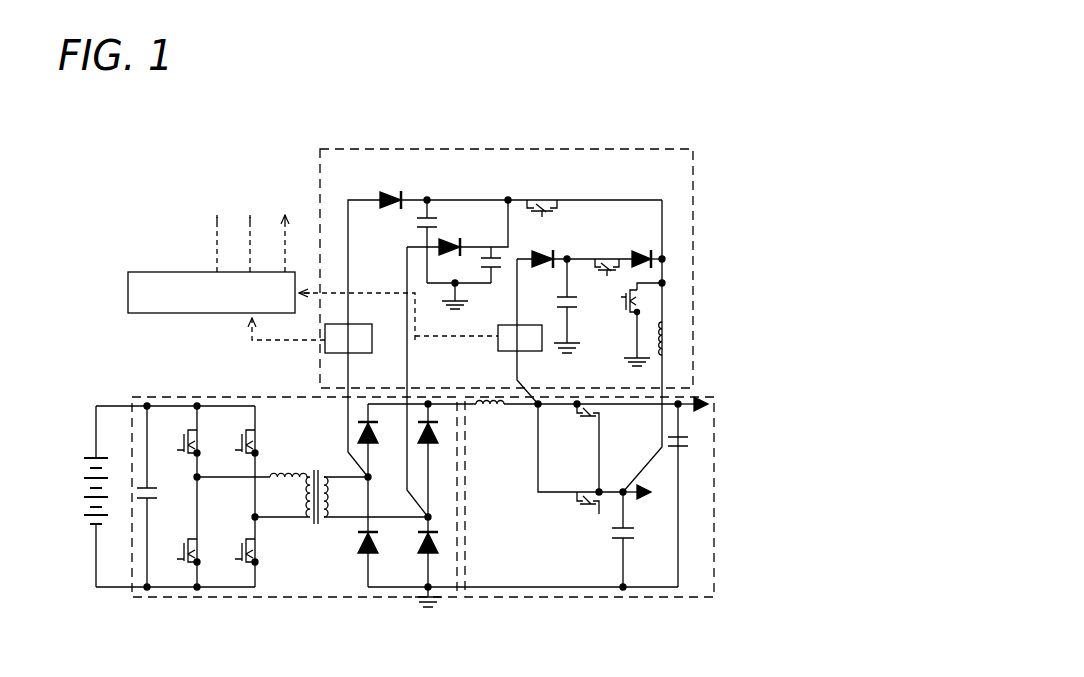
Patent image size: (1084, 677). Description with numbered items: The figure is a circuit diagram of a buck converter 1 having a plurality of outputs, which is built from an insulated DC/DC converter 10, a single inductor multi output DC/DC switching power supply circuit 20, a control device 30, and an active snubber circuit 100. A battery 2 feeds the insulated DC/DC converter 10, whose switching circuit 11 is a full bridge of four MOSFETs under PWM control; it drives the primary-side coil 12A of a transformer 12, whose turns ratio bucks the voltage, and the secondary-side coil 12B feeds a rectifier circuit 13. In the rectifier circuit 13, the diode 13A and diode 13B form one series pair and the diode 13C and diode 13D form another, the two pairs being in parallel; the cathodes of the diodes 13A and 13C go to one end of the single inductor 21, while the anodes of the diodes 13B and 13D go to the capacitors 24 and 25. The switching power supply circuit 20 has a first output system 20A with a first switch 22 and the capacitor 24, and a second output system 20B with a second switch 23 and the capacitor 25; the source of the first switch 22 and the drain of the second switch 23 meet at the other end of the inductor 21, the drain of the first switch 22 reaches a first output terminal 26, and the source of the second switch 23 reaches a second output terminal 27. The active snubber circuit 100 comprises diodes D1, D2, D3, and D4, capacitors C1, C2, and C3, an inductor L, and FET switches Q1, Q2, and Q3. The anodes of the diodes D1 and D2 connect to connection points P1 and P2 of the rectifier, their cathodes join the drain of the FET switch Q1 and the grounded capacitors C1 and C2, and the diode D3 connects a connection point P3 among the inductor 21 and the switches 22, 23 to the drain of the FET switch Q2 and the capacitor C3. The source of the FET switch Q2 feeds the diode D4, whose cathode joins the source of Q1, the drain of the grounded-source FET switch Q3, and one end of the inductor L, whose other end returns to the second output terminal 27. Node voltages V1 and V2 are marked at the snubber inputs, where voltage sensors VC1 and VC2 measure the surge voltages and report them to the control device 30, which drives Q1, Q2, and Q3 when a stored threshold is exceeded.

The buck converter 1 is at (697, 145).
The active snubber circuit 100 is at (633, 141).
The insulated DC/DC converter 10 is at (178, 396).
The single inductor multi output (SIMO) DC/DC switching power supply circuit 20 is at (711, 384).
The control device 30 is at (212, 272).
The battery 2 is at (88, 510).
The switching circuit 11 is at (220, 399).
The transformer 12 is at (312, 496).
The primary-side coil 12A is at (290, 519).
The secondary-side coil 12B is at (328, 519).
The rectifier circuit 13 is at (409, 474).
The diode 13A is at (348, 420).
The diode 13B is at (371, 560).
The diode 13C is at (440, 446).
The diode 13D is at (432, 560).
The inductor 21 is at (480, 408).
The first switch 22 is at (590, 421).
The second switch 23 is at (590, 516).
The capacitor 24 is at (690, 440).
The capacitor 25 is at (635, 536).
The first output terminal 26 is at (680, 398).
The second output terminal 27 is at (622, 489).
The first output system 20A is at (713, 404).
The second output system 20B is at (656, 492).
The diode D1 is at (378, 197).
The diode D2 is at (439, 240).
The diode D3 is at (546, 254).
The diode D4 is at (646, 252).
The capacitor C1 is at (434, 217).
The capacitor C2 is at (493, 285).
The capacitor C3 is at (563, 322).
The node voltage V1 is at (422, 187).
The node voltage V2 is at (572, 245).
The connection point P1 is at (356, 463).
The connection point P2 is at (432, 518).
The connection point P3 is at (536, 407).
The FET switch Q1 is at (548, 209).
The FET switch Q2 is at (608, 266).
The FET switch Q3 is at (627, 297).
The inductor L is at (668, 336).
The voltage sensor VC1 is at (348, 338).
The voltage sensor VC2 is at (520, 338).